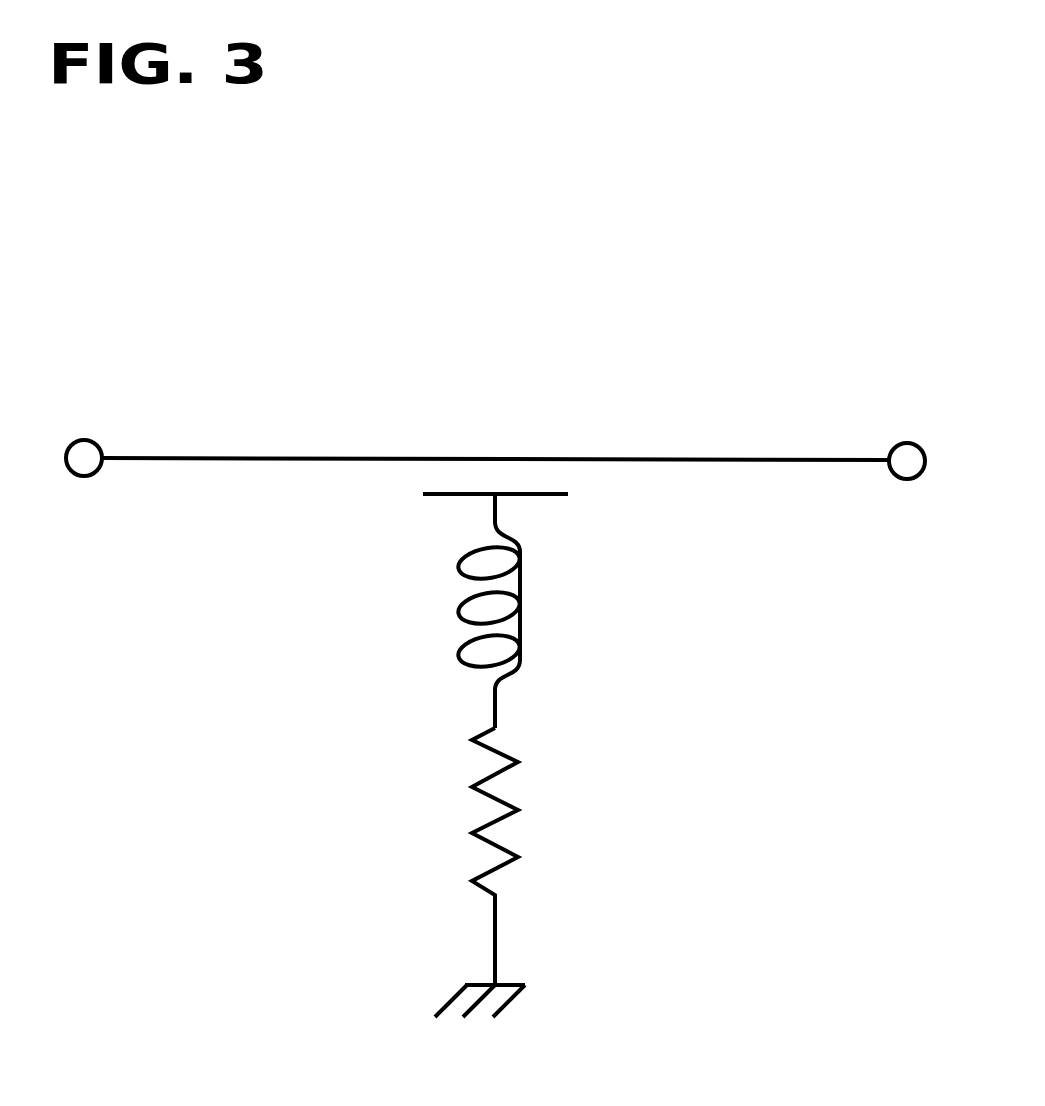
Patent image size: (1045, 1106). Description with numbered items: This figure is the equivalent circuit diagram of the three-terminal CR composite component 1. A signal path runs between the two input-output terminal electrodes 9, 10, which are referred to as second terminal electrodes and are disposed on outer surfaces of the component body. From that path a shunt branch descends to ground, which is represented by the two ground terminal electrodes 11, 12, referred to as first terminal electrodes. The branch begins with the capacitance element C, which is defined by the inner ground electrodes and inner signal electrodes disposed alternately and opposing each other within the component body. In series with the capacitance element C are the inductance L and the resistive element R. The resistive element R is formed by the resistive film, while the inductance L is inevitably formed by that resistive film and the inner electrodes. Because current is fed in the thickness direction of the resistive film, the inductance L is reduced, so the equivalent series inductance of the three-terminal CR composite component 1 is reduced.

The three-terminal CR composite component 1 is at (318, 239).
The input-output terminal electrode 9 is at (86, 439).
The input-output terminal electrode 10 is at (904, 441).
The capacitance element C is at (407, 490).
The inductance L is at (538, 625).
The resistive element R is at (530, 825).
The ground terminal electrode 11 is at (574, 1031).
The ground terminal electrode 12 is at (523, 1002).